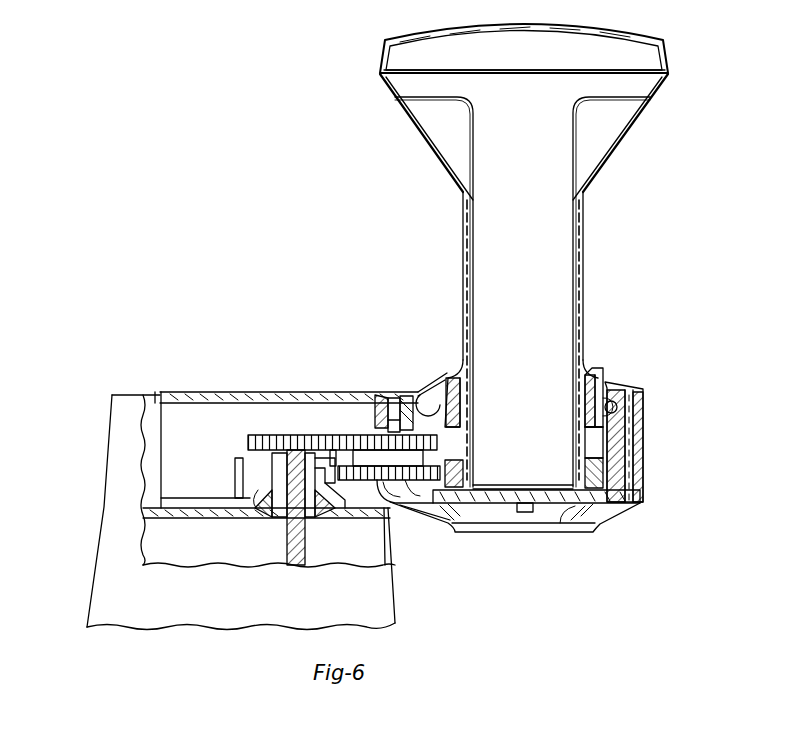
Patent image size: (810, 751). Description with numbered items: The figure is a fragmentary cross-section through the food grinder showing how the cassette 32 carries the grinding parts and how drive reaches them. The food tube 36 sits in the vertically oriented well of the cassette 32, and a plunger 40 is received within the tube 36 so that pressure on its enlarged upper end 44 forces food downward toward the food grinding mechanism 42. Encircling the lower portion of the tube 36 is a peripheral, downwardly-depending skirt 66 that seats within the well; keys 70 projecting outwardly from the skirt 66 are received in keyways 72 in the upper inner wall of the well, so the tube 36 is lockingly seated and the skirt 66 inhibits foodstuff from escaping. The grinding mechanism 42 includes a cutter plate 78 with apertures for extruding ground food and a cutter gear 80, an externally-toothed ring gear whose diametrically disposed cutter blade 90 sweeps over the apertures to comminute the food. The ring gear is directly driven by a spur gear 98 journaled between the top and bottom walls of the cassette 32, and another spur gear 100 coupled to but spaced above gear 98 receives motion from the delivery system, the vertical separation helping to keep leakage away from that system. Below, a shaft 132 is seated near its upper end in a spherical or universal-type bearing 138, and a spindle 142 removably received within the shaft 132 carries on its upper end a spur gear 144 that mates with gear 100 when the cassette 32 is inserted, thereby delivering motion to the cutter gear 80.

The enlarged upper end 44 is at (668, 55).
The food tube 36 is at (584, 238).
The plunger 40 is at (570, 308).
The food grinding mechanism 42 is at (527, 479).
The skirt 66 is at (418, 388).
The key 70 is at (617, 392).
The keyway 72 is at (612, 420).
The cassette 32 is at (643, 466).
The cutter gear 80 is at (390, 502).
The cutter plate 78 is at (492, 528).
The cutter blade 90 is at (560, 520).
The spur gear 144 is at (275, 437).
The spur gear 100 is at (357, 437).
The spindle 142 is at (298, 568).
The shaft 132 is at (283, 535).
The universal-type bearing 138 is at (313, 517).
The spur gear 98 is at (400, 505).